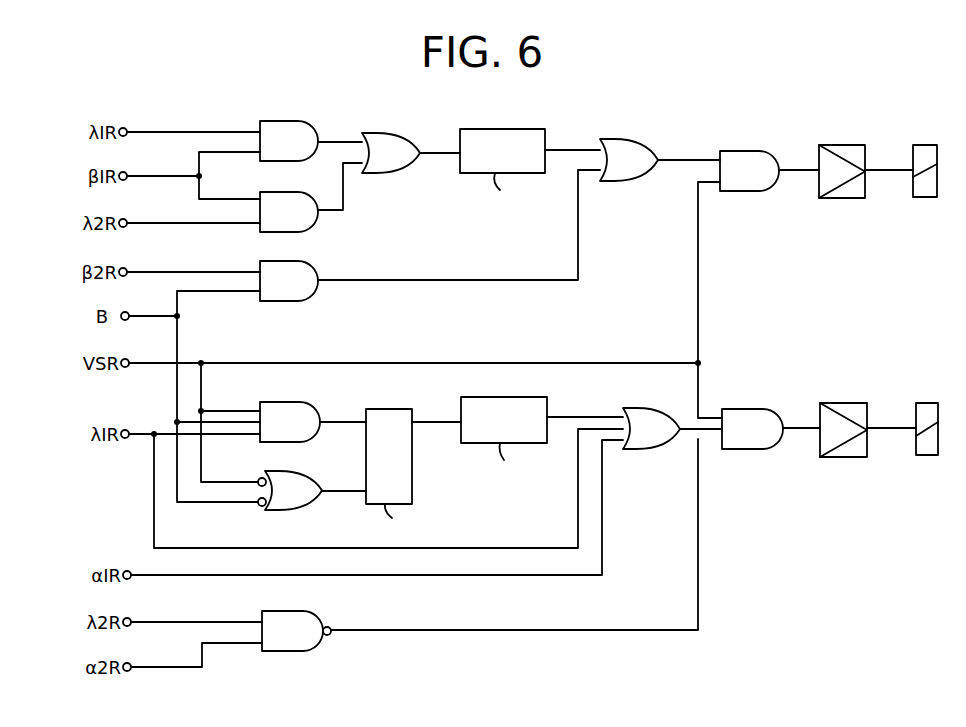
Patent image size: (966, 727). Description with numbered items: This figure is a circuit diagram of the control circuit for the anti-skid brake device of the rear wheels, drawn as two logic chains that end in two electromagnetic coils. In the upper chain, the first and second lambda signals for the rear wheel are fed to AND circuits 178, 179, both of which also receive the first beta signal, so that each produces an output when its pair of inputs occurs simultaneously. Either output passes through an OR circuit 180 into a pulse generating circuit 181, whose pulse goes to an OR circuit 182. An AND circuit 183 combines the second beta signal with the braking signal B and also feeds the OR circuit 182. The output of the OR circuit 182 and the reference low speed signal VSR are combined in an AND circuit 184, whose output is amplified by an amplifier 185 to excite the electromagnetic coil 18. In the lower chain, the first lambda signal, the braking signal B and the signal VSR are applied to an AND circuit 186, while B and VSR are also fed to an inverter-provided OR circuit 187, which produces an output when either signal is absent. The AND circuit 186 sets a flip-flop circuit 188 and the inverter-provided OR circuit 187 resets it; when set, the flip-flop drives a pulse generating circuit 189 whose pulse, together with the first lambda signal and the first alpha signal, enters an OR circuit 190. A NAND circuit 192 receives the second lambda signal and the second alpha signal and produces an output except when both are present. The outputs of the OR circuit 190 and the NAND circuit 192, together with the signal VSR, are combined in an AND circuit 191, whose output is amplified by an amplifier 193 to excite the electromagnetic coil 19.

The AND circuit 178 is at (305, 154).
The AND circuit 179 is at (305, 225).
The OR circuit 180 is at (373, 166).
The pulse generating circuit 181 is at (520, 164).
The OR circuit 182 is at (609, 173).
The AND circuit 183 is at (305, 294).
The AND circuit 184 is at (763, 184).
The amplifier 185 is at (837, 145).
The electromagnetic coil 18 is at (924, 145).
The AND circuit 186 is at (305, 435).
The inverter-provided OR circuit 187 is at (307, 503).
The flip-flop circuit 188 is at (407, 469).
The pulse generating circuit 189 is at (486, 433).
The OR circuit 190 is at (633, 442).
The AND circuit 191 is at (727, 442).
The NAND circuit 192 is at (306, 644).
The amplifier 193 is at (847, 403).
The electromagnetic coil 19 is at (928, 403).